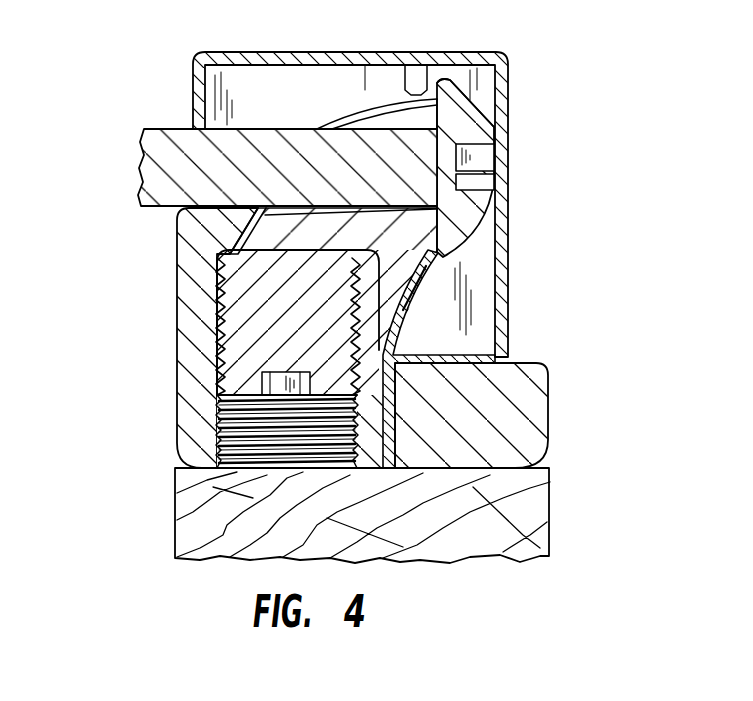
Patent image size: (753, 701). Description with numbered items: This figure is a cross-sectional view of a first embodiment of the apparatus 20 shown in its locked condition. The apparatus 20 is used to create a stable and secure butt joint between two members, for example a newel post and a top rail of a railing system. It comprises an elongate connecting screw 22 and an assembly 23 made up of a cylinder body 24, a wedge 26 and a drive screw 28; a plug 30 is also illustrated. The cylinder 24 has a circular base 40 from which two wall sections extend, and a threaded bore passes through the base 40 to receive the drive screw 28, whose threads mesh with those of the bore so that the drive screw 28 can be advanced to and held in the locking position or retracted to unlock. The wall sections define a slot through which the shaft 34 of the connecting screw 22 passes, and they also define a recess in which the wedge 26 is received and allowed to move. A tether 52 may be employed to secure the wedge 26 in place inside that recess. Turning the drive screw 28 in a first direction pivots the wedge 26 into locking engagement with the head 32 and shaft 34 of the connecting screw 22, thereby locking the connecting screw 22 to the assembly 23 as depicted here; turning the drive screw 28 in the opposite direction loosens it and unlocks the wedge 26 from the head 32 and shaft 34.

The apparatus 20 is at (332, 235).
The connecting screw 22 is at (140, 160).
The assembly 23 is at (347, 260).
The cylinder body 24 is at (507, 213).
The wedge 26 is at (250, 225).
The drive screw 28 is at (247, 319).
The plug 30 is at (538, 494).
The head 32 is at (470, 118).
The shaft 34 is at (187, 138).
The circular base 40 is at (538, 381).
The tether 52 is at (398, 422).